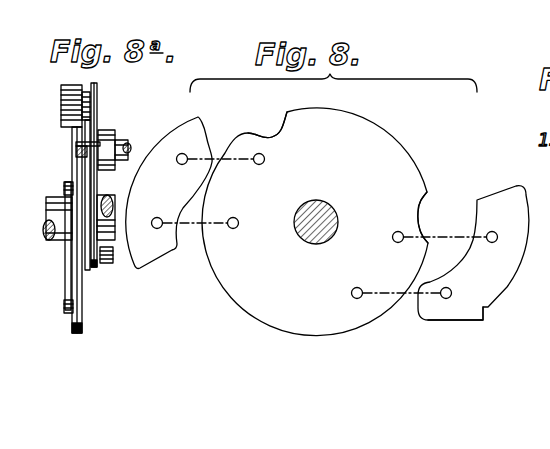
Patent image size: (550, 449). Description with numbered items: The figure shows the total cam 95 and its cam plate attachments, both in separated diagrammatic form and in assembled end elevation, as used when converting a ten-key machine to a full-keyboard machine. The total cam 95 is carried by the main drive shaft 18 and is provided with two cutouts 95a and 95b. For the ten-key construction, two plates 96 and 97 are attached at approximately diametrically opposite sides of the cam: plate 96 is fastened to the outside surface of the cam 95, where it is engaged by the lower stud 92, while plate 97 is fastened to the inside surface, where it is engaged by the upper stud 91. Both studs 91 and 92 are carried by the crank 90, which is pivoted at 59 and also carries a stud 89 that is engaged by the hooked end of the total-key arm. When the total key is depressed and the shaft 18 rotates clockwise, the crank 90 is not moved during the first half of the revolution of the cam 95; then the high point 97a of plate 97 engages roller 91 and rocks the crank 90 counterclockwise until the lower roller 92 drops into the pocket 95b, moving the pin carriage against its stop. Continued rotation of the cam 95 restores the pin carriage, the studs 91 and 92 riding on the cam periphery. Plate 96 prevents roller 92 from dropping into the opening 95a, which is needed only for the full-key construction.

In FIG. 8, the main drive shaft 18 is at (298, 234).
In FIG. 8A, the pivot 59 is at (127, 148).
In FIG. 8A, the stud 89 is at (100, 263).
In FIG. 8A, the crank 90 is at (97, 115).
In FIG. 8A, the stud 91 is at (61, 103).
In FIG. 8A, the stud 92 is at (80, 228).
In FIG. 8A, the total cam 95 is at (75, 333).
In FIG. 8, the total cam 95 is at (302, 335).
In FIG. 8, the cutout 95a is at (273, 137).
In FIG. 8, the pocket 95b is at (418, 208).
In FIG. 8A, the plate 96 is at (83, 268).
In FIG. 8, the plate 96 is at (213, 160).
In FIG. 8A, the plate 97 is at (63, 305).
In FIG. 8, the plate 97 is at (502, 283).
In FIG. 8, the high point 97a is at (482, 320).